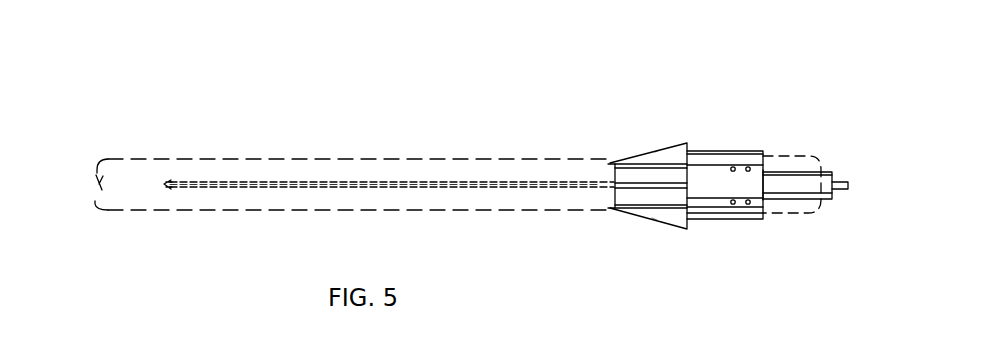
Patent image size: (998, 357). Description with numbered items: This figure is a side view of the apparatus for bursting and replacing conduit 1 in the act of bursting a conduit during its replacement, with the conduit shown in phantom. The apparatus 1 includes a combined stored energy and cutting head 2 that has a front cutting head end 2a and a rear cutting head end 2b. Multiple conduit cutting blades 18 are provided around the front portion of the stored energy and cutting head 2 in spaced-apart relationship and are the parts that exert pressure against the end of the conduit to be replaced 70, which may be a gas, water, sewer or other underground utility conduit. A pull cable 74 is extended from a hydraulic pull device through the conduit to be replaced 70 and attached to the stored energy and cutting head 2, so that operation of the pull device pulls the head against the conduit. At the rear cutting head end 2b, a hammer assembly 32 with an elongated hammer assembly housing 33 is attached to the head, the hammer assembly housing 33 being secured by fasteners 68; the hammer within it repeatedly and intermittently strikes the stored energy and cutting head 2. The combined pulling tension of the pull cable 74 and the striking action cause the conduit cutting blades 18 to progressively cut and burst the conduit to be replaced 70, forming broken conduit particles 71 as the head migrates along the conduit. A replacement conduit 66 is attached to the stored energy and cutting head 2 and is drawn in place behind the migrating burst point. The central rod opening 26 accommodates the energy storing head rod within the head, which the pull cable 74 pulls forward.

The apparatus for bursting and replacing conduit 1 is at (601, 84).
The combined stored energy and cutting head 2 is at (702, 148).
The front cutting head end 2a is at (610, 205).
The rear cutting head end 2b is at (768, 190).
The conduit cutting blades 18 is at (678, 147).
The central rod opening 26 is at (580, 187).
The hammer assembly 32 is at (853, 134).
The hammer assembly housing 33 is at (832, 199).
The replacement conduit 66 is at (790, 157).
The fasteners 68 is at (733, 166).
The conduit to be replaced 70 is at (450, 158).
The broken conduit particles 71 is at (667, 133).
The pull cable 74 is at (305, 188).